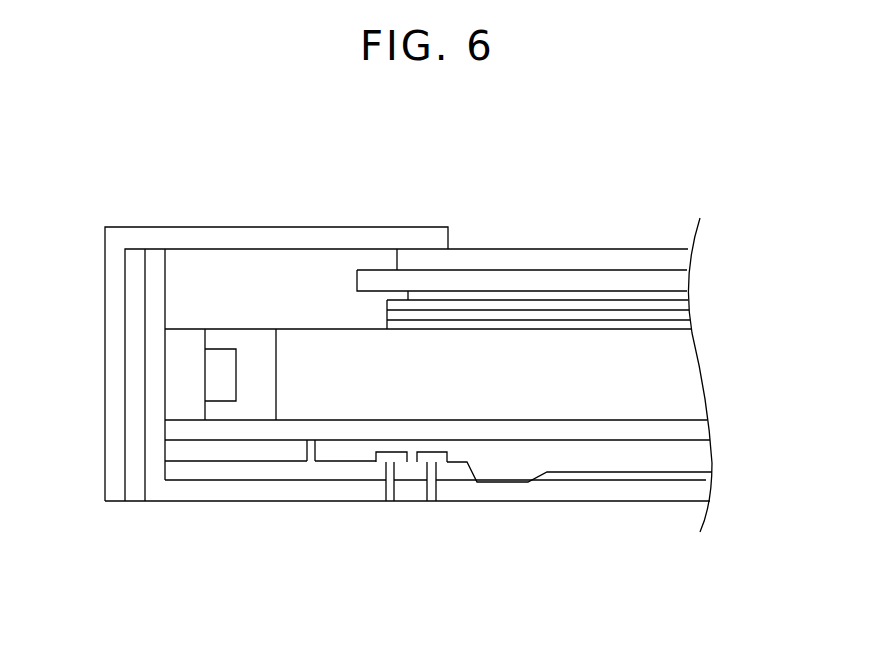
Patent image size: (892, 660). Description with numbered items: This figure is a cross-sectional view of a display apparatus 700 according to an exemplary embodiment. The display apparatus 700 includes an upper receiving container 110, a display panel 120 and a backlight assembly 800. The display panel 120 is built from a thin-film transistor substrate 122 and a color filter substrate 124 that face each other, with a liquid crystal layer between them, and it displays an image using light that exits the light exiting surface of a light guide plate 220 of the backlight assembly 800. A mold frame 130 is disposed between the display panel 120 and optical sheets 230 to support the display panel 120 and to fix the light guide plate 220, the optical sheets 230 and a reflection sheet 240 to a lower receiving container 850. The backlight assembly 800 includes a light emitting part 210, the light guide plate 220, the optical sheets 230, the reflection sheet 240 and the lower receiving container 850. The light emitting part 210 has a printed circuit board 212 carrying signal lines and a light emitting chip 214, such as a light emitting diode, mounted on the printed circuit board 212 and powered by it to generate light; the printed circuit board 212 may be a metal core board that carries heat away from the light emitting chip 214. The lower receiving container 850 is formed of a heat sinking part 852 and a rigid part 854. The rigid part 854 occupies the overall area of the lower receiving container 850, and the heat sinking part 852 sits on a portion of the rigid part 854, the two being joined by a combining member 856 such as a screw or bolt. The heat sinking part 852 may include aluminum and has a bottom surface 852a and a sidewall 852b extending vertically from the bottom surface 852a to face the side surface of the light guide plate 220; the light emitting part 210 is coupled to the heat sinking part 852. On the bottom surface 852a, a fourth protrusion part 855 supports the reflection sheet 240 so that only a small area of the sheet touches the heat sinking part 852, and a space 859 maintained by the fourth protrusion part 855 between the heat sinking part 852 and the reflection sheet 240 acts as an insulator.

The display apparatus 700 is at (660, 203).
The upper receiving container 110 is at (287, 227).
The mold frame 130 is at (213, 260).
The display panel 120 is at (748, 247).
The thin-film transistor substrate 122 is at (683, 284).
The color filter substrate 124 is at (683, 260).
The optical sheets 230 is at (708, 299).
The light guide plate 220 is at (688, 380).
The reflection sheet 240 is at (700, 434).
The light emitting part 210 is at (49, 357).
The printed circuit board 212 is at (173, 404).
The light emitting chip 214 is at (215, 370).
The backlight assembly 800 is at (752, 299).
The lower receiving container 850 is at (620, 588).
The heat sinking part 852 is at (225, 554).
The bottom surface 852a is at (197, 473).
The sidewall 852b is at (153, 455).
The rigid part 854 is at (597, 494).
The fourth protrusion part 855 is at (303, 448).
The combining member 856 is at (396, 489).
The space 859 is at (340, 452).